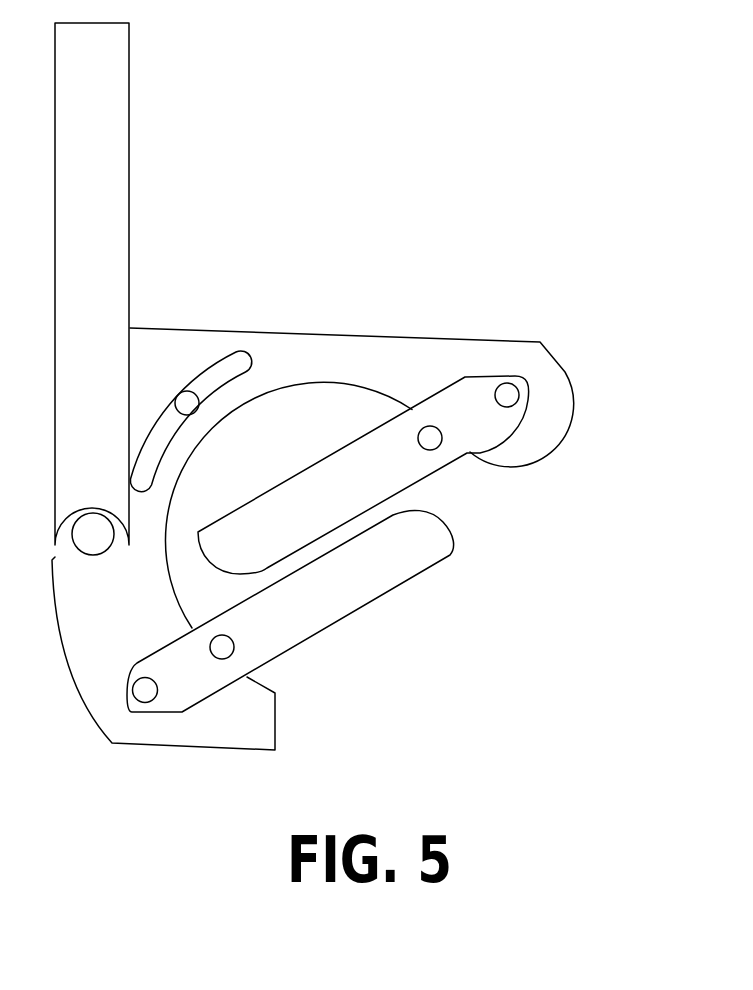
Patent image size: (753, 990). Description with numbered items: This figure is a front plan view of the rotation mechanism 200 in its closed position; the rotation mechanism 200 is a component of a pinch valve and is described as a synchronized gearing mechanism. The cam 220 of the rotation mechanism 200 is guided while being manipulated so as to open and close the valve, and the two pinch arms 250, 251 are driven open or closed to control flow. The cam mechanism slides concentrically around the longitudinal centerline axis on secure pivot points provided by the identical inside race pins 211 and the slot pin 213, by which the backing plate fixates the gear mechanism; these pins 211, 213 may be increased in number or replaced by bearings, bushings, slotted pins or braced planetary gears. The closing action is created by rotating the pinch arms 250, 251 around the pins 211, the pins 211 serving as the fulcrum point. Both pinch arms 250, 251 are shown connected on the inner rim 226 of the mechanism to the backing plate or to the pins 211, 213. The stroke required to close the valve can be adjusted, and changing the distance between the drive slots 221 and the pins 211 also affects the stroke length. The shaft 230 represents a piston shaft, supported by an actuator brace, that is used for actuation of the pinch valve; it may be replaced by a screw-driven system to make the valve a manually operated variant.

The rotation mechanism 200 is at (558, 130).
The shaft 230 is at (88, 96).
The cam 220 is at (323, 353).
The slot pin 213 is at (187, 400).
The pinch arm 251 is at (340, 485).
The pinch arm 250 is at (363, 570).
The drive slot 221 is at (507, 395).
The inside race pin 211 is at (432, 438).
The inner rim 226 is at (293, 402).